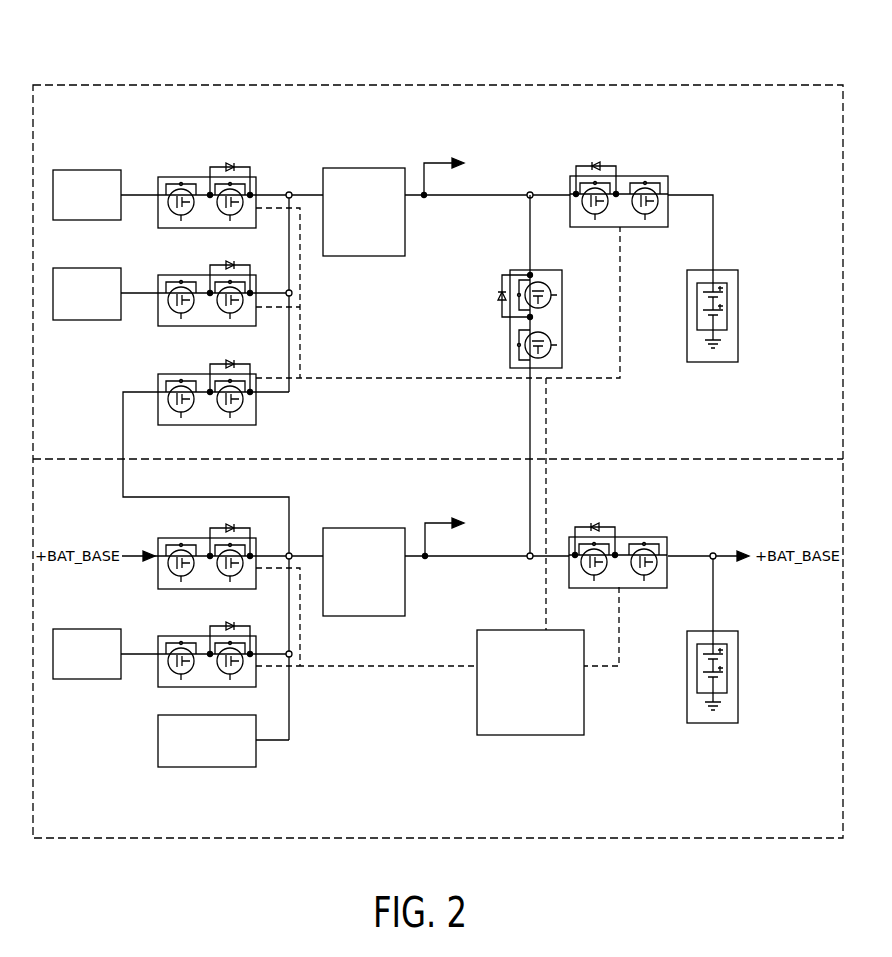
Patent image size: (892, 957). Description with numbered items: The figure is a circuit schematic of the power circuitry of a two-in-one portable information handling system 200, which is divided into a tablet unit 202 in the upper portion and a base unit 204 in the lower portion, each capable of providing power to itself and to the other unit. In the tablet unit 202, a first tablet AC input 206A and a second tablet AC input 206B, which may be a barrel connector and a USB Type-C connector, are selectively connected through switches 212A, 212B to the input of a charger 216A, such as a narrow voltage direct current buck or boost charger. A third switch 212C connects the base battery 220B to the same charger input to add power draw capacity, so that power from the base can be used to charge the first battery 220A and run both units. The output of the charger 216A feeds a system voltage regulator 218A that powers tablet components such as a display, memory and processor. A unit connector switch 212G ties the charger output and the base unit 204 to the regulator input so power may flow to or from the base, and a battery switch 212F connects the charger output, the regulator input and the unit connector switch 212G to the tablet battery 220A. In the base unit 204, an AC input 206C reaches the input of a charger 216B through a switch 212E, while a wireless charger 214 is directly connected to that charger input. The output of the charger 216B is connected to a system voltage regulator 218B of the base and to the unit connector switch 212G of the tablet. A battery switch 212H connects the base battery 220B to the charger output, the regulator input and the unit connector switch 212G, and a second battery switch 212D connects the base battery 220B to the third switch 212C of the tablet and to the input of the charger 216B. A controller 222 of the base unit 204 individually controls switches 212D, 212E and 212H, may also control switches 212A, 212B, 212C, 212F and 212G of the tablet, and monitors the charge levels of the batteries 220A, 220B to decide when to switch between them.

The information handling system 200 is at (775, 85).
The tablet unit 202 is at (445, 440).
The base unit 204 is at (440, 478).
The first tablet AC input 206A is at (85, 170).
The second tablet AC input 206B is at (85, 320).
The AC input 206C is at (85, 680).
The switch 212A is at (186, 177).
The switch 212B is at (210, 273).
The third switch 212C is at (210, 372).
The second battery switch 212D is at (210, 536).
The switch 212E is at (210, 634).
The battery switch 212F is at (643, 175).
The unit connector switch 212G is at (510, 332).
The battery switch 212H is at (643, 537).
The wireless charger 214 is at (205, 768).
The charger 216A is at (365, 256).
The charger 216B is at (363, 528).
The system voltage regulator 218A is at (432, 162).
The system voltage regulator 218B is at (432, 525).
The first battery 220A is at (738, 290).
The second battery 220B is at (738, 652).
The controller 222 is at (585, 720).